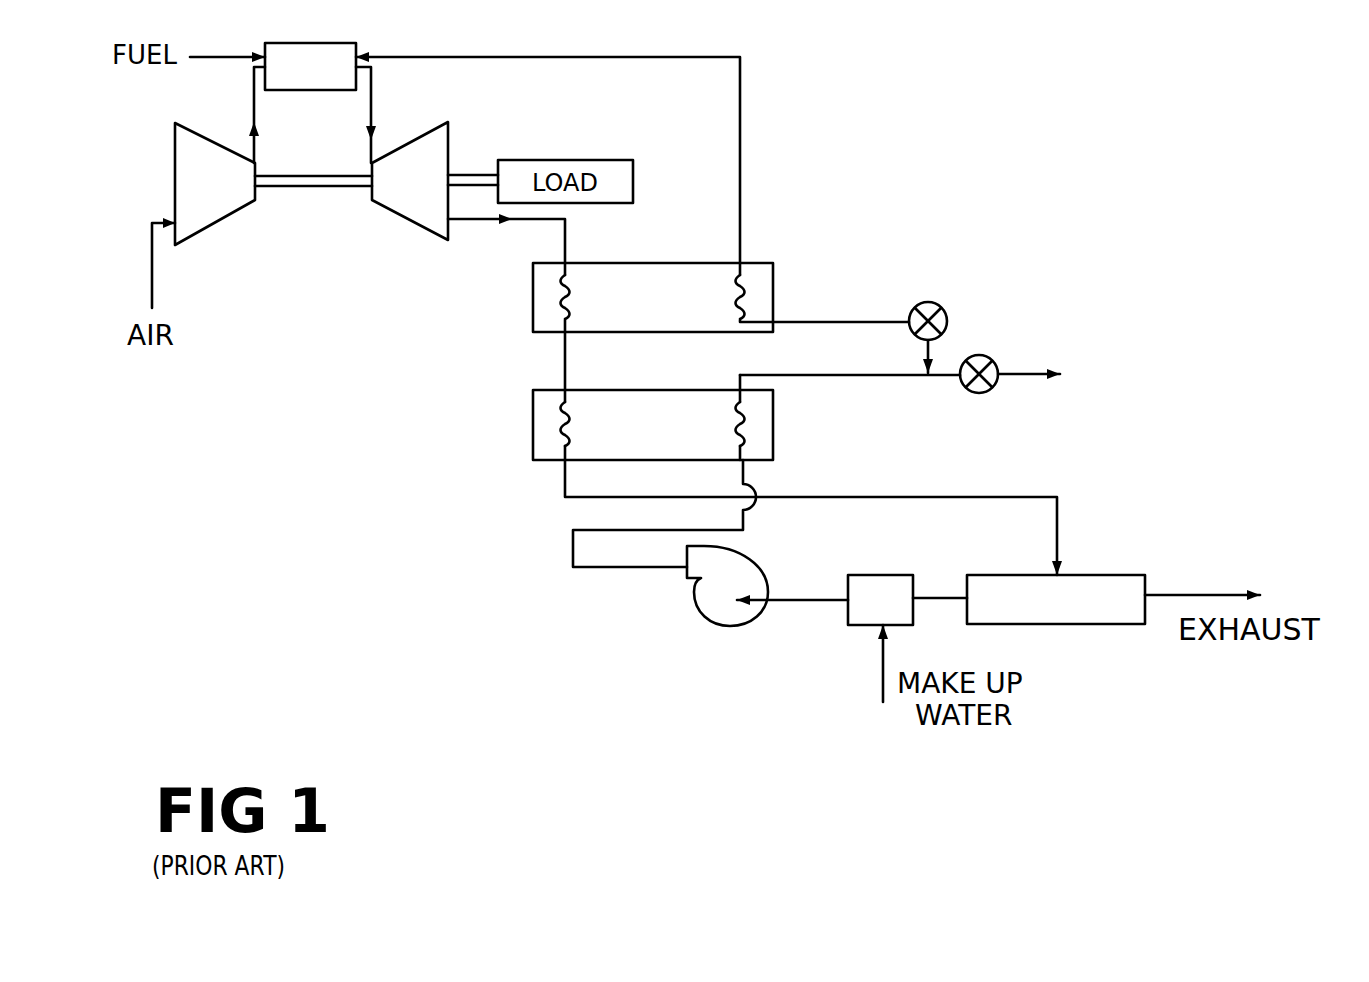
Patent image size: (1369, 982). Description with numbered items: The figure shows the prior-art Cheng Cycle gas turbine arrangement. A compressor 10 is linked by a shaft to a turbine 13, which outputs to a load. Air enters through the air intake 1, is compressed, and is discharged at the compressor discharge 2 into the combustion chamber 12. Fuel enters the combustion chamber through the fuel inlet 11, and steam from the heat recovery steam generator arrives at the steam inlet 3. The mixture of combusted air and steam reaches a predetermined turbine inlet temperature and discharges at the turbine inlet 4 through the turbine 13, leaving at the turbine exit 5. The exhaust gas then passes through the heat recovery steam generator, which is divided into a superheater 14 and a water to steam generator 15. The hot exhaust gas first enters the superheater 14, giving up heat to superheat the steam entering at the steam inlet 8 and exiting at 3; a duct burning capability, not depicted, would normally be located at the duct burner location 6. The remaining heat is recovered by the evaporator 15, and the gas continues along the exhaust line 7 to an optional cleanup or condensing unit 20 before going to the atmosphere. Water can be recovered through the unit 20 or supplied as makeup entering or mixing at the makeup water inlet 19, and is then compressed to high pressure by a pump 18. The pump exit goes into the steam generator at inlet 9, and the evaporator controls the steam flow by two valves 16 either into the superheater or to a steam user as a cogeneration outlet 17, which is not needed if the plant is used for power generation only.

The air intake 1 is at (153, 254).
The compressor discharge 2 is at (254, 97).
The steam inlet to combustion chamber 3 is at (548, 145).
The turbine inlet discharge 4 is at (374, 115).
The turbine exit 5 is at (518, 238).
The duct burner location 6 is at (550, 361).
The exhaust line to stack 7 is at (800, 517).
The steam inlet to superheater 8 is at (824, 305).
The steam generator inlet 9 is at (647, 513).
The compressor 10 is at (215, 221).
The fuel inlet 11 is at (227, 43).
The combustion chamber 12 is at (337, 42).
The turbine 13 is at (410, 222).
The superheater 14 is at (533, 292).
The water to steam generator 15 is at (533, 421).
The valves 16 is at (942, 307).
The cogeneration steam user outlet 17 is at (990, 358).
The pump 18 is at (767, 602).
The makeup water inlet 19 is at (907, 584).
The cleanup or condensing unit 20 is at (1087, 575).